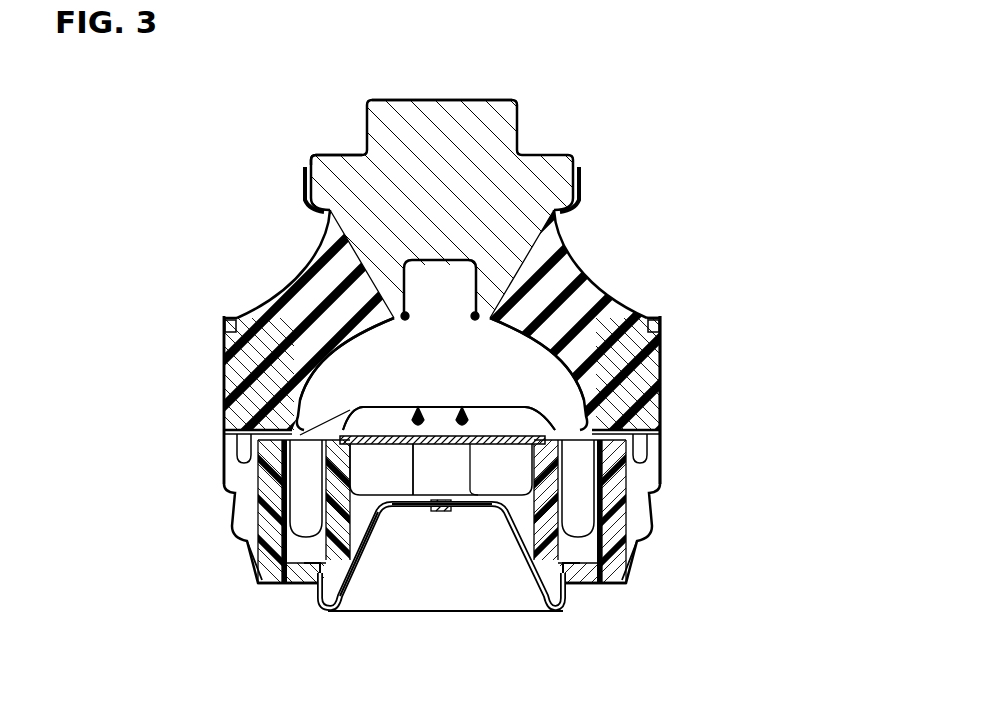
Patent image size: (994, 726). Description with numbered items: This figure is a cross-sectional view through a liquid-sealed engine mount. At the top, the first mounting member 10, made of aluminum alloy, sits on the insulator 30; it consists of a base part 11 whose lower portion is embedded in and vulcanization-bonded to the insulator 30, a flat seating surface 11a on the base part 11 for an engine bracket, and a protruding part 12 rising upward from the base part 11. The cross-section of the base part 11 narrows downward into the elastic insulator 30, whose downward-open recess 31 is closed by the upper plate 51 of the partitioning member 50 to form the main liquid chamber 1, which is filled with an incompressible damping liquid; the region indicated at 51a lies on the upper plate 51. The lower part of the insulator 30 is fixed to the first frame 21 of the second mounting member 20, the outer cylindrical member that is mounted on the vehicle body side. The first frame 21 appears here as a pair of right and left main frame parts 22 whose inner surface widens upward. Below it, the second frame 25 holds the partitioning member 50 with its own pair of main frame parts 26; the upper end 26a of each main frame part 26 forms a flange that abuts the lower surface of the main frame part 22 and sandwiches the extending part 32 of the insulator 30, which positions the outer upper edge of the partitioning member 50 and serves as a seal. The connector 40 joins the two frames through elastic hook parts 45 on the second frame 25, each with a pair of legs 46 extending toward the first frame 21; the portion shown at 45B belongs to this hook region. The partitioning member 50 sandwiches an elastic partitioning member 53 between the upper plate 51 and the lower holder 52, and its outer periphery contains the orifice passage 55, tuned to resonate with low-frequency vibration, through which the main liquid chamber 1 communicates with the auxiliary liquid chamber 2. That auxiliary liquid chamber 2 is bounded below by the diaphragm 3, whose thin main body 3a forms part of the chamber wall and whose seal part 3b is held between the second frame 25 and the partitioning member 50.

The main liquid chamber 1 is at (451, 370).
The auxiliary liquid chamber 2 is at (335, 611).
The diaphragm 3 is at (560, 611).
The main body 3a is at (360, 592).
The seal part 3b is at (584, 582).
The first mounting member 10 is at (547, 150).
The base part 11 is at (363, 183).
The seating surface 11a is at (320, 155).
The protruding part 12 is at (448, 108).
The second mounting member 20 is at (708, 474).
The first frame 21 is at (653, 320).
The main frame part 22 is at (233, 345).
The second frame 25 is at (647, 553).
The main frame part 26 is at (613, 470).
The upper end 26a is at (650, 425).
The insulator 30 is at (600, 277).
The recess 31 is at (363, 333).
The extending part 32 is at (630, 417).
The connector 40 is at (220, 386).
The elastic hook part 45 is at (663, 468).
The lower portion of outer bracket 45B is at (647, 543).
The legs 46 is at (663, 447).
The partitioning member 50 is at (457, 403).
The upper plate 51 is at (323, 427).
The upper surface of partition plate 51a is at (513, 413).
The lower holder 52 is at (502, 517).
The elastic partitioning member 53 is at (427, 450).
The orifice passage 55 is at (267, 540).